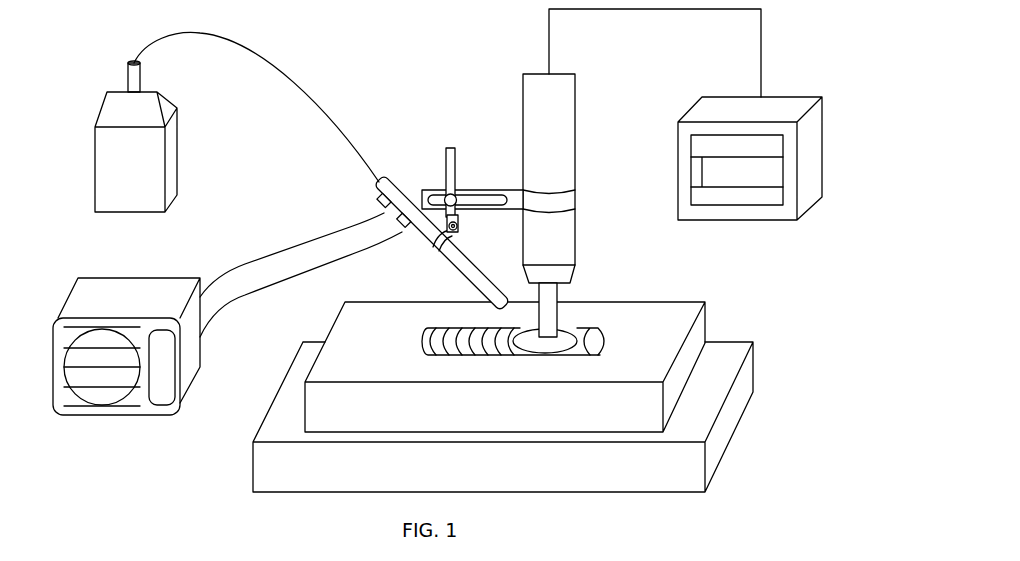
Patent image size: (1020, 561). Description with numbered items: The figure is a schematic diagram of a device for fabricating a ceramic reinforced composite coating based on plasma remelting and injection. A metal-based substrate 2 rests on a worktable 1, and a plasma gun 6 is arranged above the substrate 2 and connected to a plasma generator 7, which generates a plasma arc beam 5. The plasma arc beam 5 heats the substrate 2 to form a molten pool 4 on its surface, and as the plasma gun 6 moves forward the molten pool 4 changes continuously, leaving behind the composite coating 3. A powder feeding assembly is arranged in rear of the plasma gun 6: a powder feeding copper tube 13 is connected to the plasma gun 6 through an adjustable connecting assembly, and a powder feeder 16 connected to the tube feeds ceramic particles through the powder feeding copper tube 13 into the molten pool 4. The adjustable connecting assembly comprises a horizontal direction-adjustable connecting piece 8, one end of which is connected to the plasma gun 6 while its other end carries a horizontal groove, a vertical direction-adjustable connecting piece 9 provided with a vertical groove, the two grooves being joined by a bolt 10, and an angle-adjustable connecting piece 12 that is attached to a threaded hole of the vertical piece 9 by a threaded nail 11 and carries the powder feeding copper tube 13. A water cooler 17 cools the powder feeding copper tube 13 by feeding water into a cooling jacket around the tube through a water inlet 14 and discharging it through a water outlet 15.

The worktable 1 is at (732, 370).
The substrate 2 is at (687, 360).
The composite coating 3 is at (452, 340).
The molten pool 4 is at (565, 340).
The plasma arc beam 5 is at (550, 322).
The plasma gun 6 is at (537, 115).
The plasma generator 7 is at (783, 112).
The horizontal direction-adjustable connecting piece 8 is at (543, 202).
The vertical direction-adjustable connecting piece 9 is at (452, 172).
The bolt 10 is at (443, 197).
The threaded nail 11 is at (455, 228).
The angle-adjustable connecting piece 12 is at (437, 247).
The powder feeding copper tube 13 is at (467, 272).
The water inlet 14 is at (380, 198).
The water outlet 15 is at (377, 212).
The powder feeder 16 is at (110, 112).
The water cooler 17 is at (97, 298).